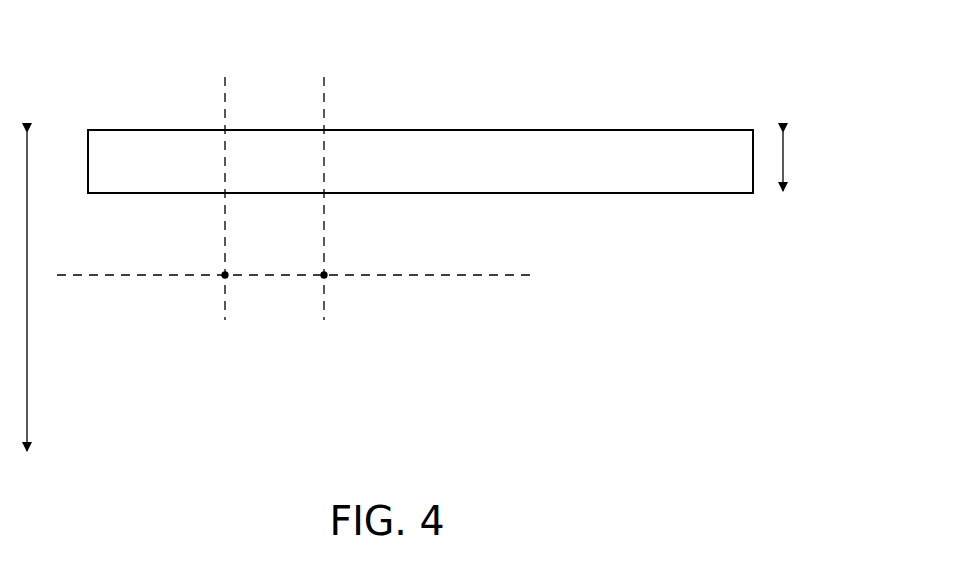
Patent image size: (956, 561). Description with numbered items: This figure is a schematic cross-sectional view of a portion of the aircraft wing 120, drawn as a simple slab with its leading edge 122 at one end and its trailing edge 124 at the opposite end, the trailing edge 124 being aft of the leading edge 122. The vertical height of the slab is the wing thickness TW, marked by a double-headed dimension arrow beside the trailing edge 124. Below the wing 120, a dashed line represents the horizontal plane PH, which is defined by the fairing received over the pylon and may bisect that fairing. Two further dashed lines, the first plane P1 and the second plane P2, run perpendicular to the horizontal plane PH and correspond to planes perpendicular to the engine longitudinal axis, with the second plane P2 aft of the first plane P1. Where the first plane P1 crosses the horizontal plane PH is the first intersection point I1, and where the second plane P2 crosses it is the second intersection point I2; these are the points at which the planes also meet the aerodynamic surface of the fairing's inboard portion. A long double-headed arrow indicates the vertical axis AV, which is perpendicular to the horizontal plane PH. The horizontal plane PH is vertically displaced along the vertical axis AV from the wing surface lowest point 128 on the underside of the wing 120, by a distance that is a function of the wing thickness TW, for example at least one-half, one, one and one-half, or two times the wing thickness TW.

The wing 120 is at (551, 129).
The leading edge 122 is at (87, 138).
The trailing edge 124 is at (754, 139).
The wing surface lowest point 128 is at (258, 194).
The first plane P1 is at (226, 92).
The second plane P2 is at (325, 92).
The horizontal plane PH is at (313, 276).
The first intersection point I1 is at (221, 278).
The second intersection point I2 is at (320, 278).
The wing thickness TW is at (784, 160).
The vertical axis AV is at (28, 352).